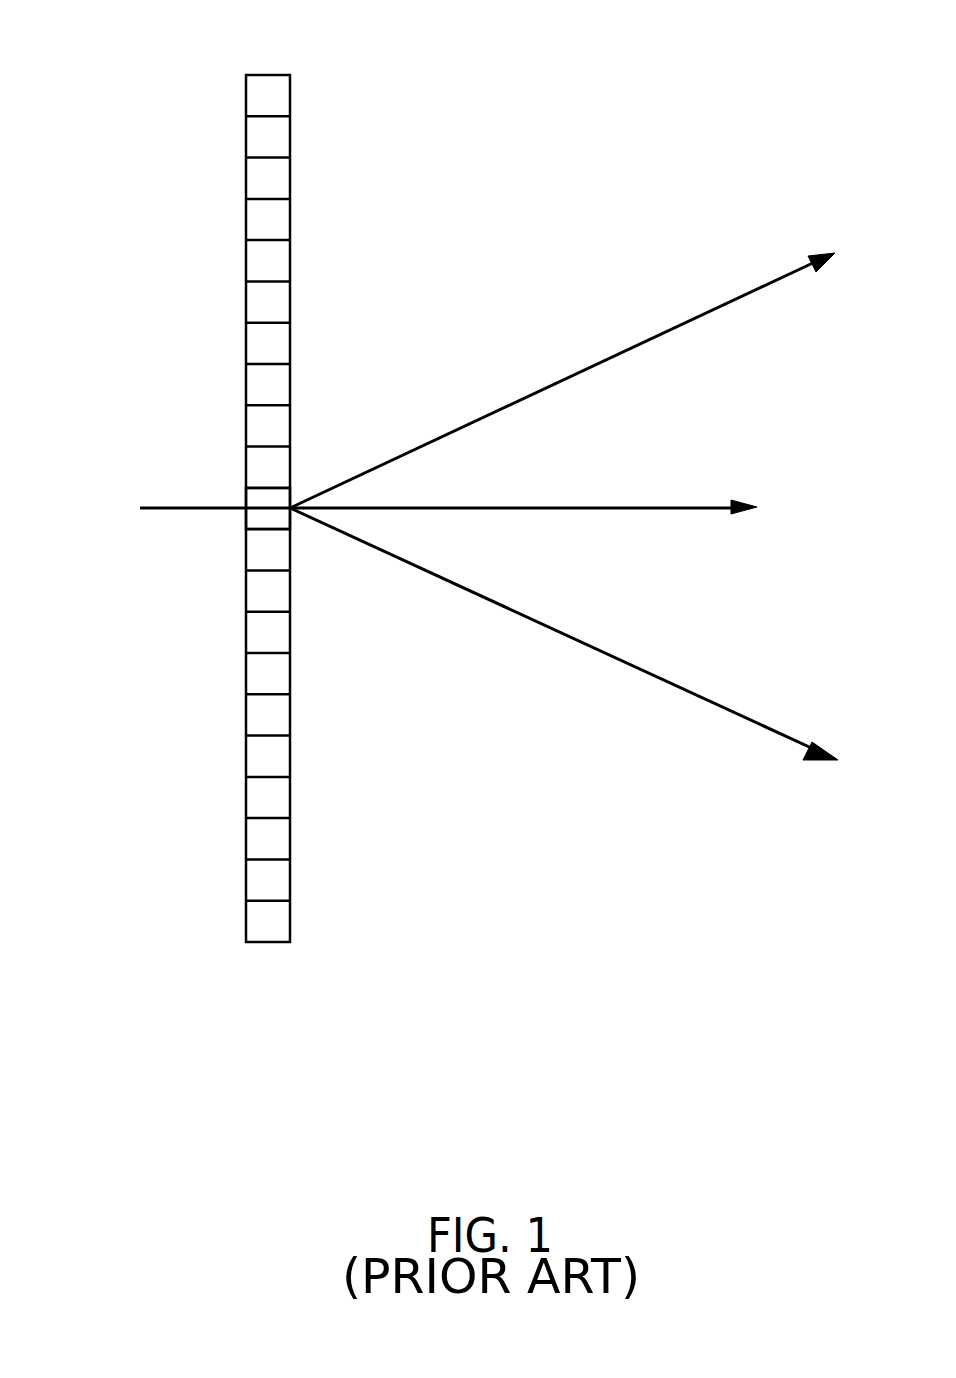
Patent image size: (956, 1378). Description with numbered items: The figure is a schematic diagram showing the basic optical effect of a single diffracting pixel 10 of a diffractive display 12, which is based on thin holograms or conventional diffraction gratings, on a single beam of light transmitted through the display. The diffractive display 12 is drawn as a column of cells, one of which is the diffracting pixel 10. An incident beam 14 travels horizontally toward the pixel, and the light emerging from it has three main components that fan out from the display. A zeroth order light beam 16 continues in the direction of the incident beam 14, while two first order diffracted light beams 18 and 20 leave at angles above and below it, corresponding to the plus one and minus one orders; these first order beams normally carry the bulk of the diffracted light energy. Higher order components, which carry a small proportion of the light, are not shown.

The diffracting pixel 10 is at (273, 75).
The diffractive display 12 is at (257, 494).
The incident beam 14 is at (189, 508).
The zeroth order light beam 16 is at (617, 505).
The first order diffracted light beam 18 is at (620, 352).
The first order diffracted light beam 20 is at (645, 668).